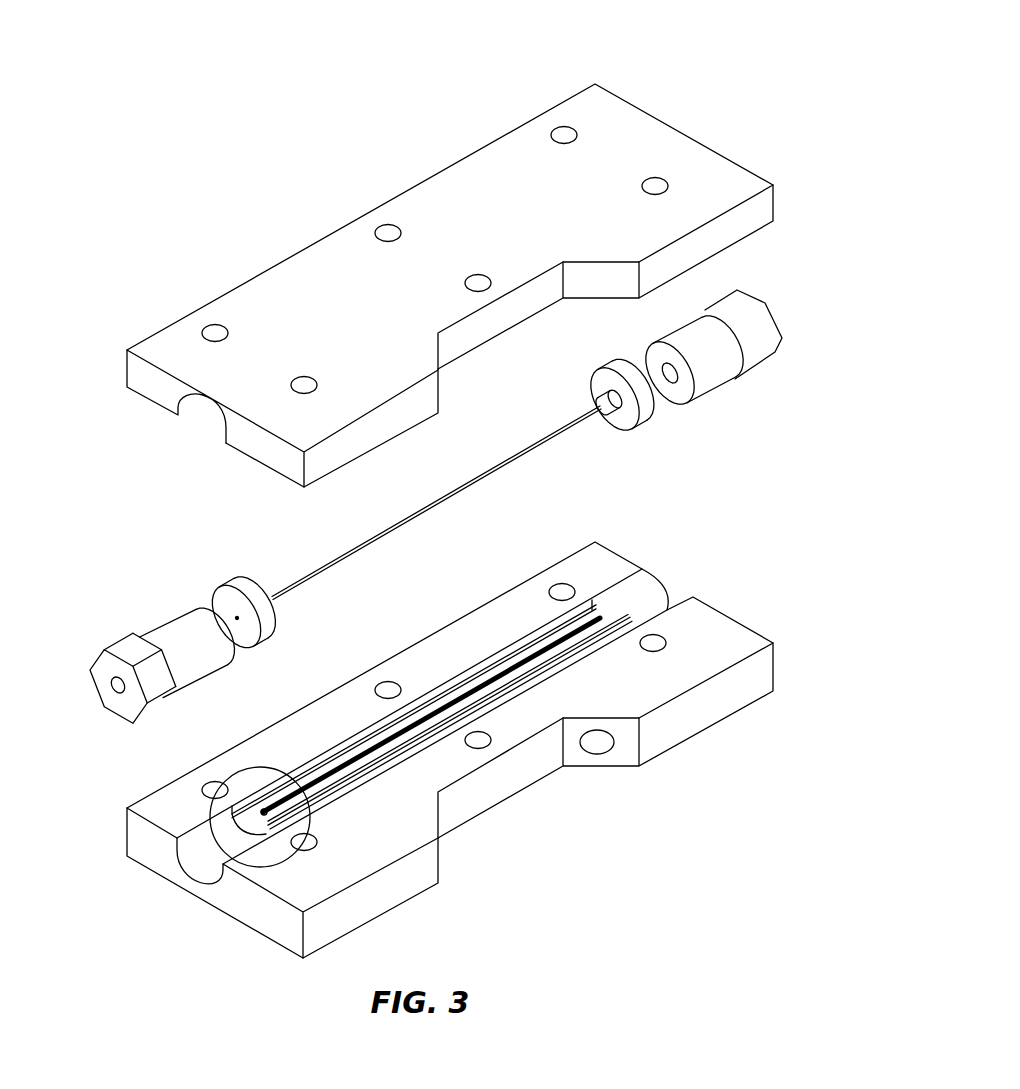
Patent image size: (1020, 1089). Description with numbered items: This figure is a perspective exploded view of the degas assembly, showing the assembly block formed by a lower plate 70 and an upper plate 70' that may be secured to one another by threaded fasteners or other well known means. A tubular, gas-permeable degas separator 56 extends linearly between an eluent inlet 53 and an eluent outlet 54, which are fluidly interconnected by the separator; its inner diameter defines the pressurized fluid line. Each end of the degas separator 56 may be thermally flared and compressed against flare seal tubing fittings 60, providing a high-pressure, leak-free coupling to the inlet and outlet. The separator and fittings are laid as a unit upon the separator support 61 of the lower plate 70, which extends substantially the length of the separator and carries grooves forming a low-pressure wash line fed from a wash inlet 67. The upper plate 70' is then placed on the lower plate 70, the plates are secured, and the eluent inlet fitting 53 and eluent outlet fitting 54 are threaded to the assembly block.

The upper plate 70' is at (450, 259).
The lower plate 70 is at (450, 750).
The eluent outlet 54 is at (747, 307).
The eluent inlet 53 is at (117, 695).
The flare seal tubing fittings 60 is at (623, 425).
The tubular degas separator 56 is at (410, 518).
The separator support 61 is at (464, 699).
The wash inlet 67 is at (597, 747).